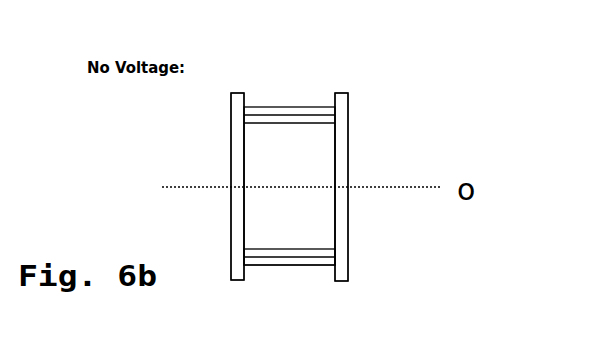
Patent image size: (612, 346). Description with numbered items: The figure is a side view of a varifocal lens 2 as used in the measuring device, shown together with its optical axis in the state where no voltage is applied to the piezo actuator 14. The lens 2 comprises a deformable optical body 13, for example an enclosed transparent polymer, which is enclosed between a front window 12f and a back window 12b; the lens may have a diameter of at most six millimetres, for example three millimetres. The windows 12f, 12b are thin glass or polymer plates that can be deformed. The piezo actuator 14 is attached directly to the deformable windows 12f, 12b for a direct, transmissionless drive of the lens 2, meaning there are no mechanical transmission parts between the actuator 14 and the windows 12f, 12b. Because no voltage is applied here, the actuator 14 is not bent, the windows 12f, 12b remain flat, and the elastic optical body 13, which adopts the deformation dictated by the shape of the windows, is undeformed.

The varifocal lens 2 is at (299, 93).
The front window 12f is at (223, 163).
The back window 12b is at (355, 141).
The deformable optical body 13 is at (314, 223).
The piezo actuator 14 is at (296, 273).